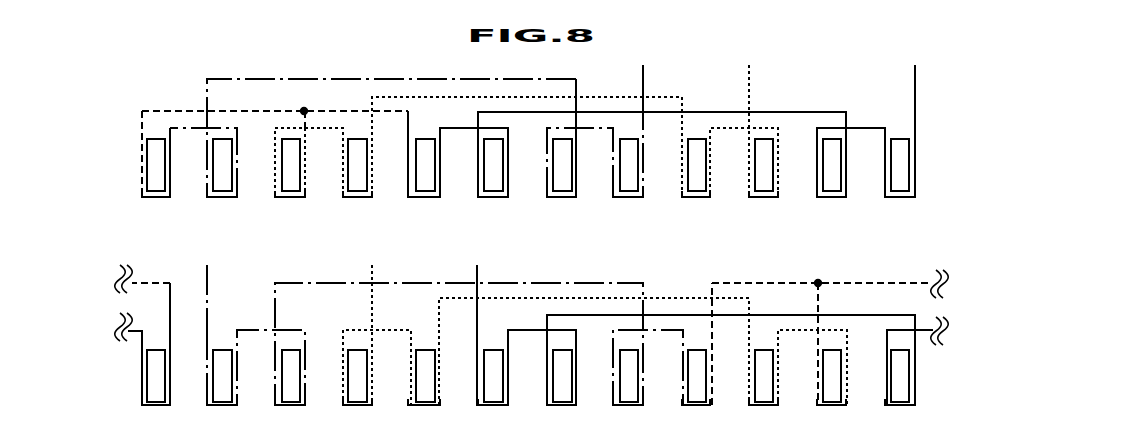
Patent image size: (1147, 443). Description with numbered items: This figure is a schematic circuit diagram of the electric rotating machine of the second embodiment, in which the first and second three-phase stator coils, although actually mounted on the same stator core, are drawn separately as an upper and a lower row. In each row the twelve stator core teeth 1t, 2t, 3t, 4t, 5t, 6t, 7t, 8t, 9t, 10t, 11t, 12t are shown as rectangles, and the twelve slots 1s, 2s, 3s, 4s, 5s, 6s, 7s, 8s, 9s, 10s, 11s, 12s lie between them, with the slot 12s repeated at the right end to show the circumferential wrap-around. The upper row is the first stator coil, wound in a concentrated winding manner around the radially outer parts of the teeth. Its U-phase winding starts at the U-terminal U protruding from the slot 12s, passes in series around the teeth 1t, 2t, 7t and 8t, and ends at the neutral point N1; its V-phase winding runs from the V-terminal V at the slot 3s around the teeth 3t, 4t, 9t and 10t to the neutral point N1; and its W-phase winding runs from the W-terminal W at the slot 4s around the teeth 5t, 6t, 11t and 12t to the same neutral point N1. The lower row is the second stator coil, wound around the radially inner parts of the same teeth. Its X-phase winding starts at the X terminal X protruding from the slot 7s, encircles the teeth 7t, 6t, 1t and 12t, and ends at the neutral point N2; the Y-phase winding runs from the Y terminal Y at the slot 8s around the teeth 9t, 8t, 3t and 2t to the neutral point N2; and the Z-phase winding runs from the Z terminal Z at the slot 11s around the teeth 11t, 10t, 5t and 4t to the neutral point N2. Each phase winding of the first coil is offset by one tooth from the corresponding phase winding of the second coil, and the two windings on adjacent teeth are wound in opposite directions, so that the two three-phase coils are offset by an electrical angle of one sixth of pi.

The slot 1s is at (886, 270).
The slot 2s is at (818, 270).
The slot 3s is at (750, 270).
The slot 4s is at (683, 270).
The slot 5s is at (614, 270).
The slot 6s is at (548, 270).
The slot 7s is at (479, 270).
The slot 8s is at (410, 270).
The slot 9s is at (344, 270).
The slot 10s is at (272, 270).
The slot 11s is at (204, 270).
The slot 12s is at (529, 270).
The stator core tooth 1t is at (897, 395).
The stator core tooth 2t is at (829, 395).
The stator core tooth 3t is at (761, 395).
The stator core tooth 4t is at (694, 395).
The stator core tooth 5t is at (626, 395).
The stator core tooth 6t is at (559, 395).
The stator core tooth 7t is at (491, 395).
The stator core tooth 8t is at (423, 395).
The stator core tooth 9t is at (355, 395).
The stator core tooth 10t is at (288, 395).
The stator core tooth 11t is at (220, 395).
The stator core tooth 12t is at (153, 395).
The neutral point N1 is at (304, 107).
The neutral point N2 is at (816, 281).
The U-terminal U is at (915, 78).
The V-terminal V is at (749, 86).
The W-terminal W is at (643, 81).
The X terminal X is at (477, 287).
The Y terminal Y is at (371, 287).
The Z terminal Z is at (206, 287).